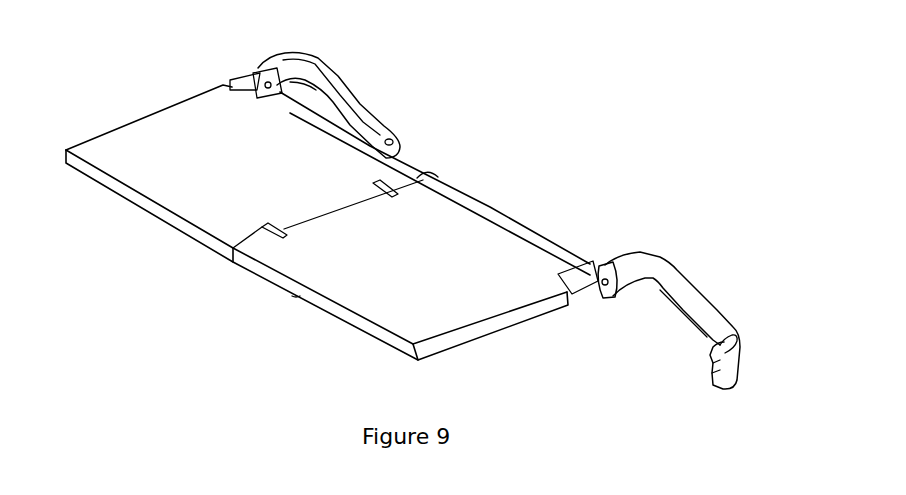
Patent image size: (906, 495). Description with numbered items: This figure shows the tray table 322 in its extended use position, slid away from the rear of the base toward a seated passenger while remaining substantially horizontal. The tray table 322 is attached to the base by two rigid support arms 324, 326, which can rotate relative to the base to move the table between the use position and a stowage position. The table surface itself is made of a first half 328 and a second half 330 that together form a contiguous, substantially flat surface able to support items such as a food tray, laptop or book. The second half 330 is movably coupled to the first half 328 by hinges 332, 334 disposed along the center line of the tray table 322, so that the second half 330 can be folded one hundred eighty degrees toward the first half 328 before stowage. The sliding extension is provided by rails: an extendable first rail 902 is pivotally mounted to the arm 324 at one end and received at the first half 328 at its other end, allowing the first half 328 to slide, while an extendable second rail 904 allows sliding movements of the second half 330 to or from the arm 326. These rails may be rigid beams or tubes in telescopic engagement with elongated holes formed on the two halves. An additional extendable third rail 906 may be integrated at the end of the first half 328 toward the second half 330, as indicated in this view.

The tray table 322 is at (195, 240).
The support arm 324 is at (683, 290).
The support arm 326 is at (345, 97).
The first half 328 is at (360, 298).
The second half 330 is at (153, 172).
The hinge 332 is at (275, 229).
The hinge 334 is at (390, 188).
The first rail 902 is at (582, 283).
The second rail 904 is at (240, 84).
The third rail 906 is at (423, 180).